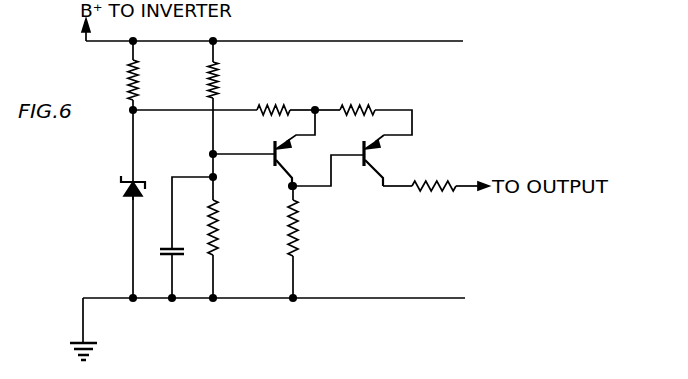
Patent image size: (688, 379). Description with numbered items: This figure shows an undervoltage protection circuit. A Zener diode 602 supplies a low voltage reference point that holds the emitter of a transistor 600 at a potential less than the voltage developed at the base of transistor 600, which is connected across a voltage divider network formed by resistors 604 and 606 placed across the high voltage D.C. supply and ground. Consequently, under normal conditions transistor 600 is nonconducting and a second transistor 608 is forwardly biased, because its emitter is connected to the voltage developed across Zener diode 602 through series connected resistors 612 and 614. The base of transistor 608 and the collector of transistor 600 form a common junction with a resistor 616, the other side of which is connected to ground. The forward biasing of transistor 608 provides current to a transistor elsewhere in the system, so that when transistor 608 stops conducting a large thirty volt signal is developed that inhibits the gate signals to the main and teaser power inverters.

The transistor 600 is at (282, 157).
The Zener diode 602 is at (121, 184).
The resistor 604 is at (219, 72).
The resistor 606 is at (219, 226).
The transistor 608 is at (371, 157).
The resistor 612 is at (272, 105).
The resistor 614 is at (356, 105).
The resistor 616 is at (299, 226).